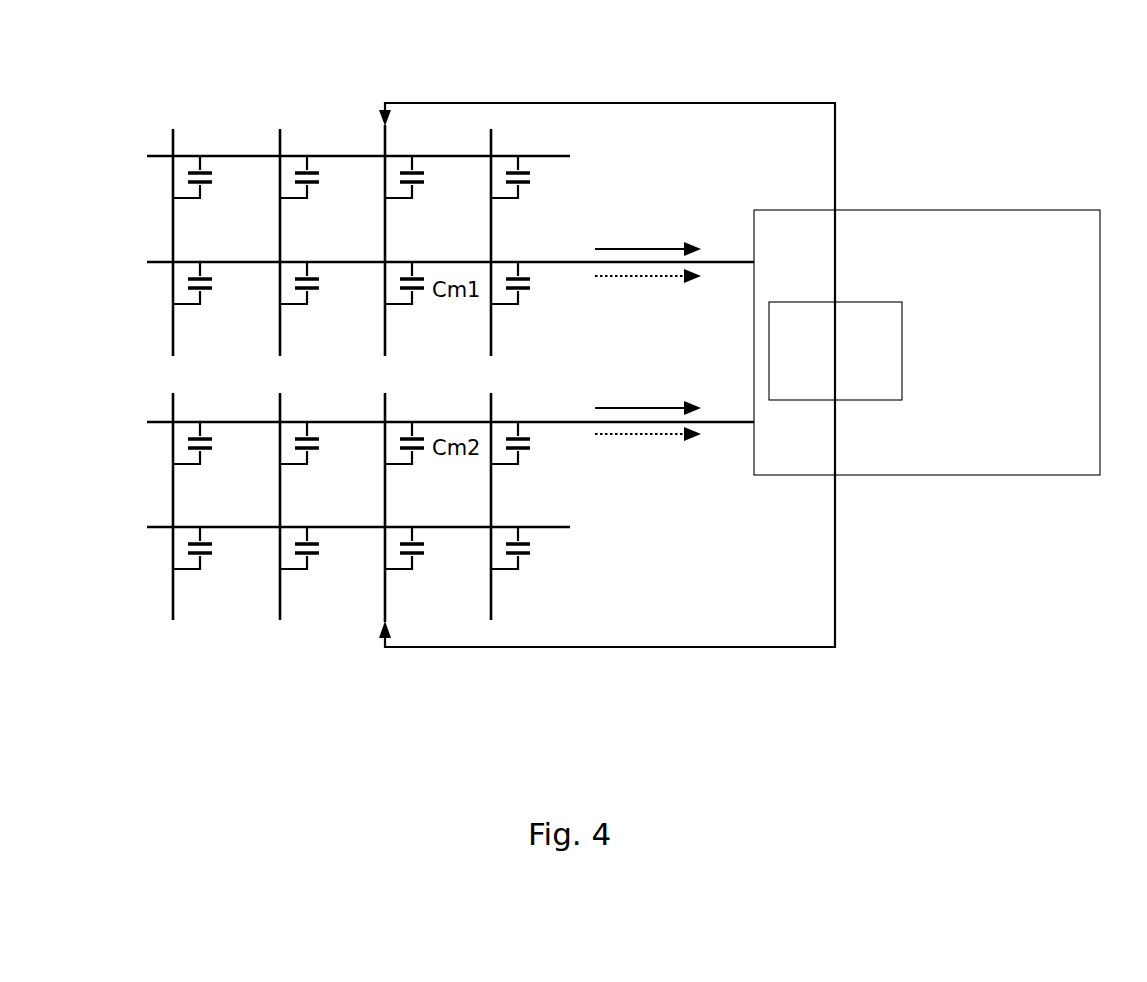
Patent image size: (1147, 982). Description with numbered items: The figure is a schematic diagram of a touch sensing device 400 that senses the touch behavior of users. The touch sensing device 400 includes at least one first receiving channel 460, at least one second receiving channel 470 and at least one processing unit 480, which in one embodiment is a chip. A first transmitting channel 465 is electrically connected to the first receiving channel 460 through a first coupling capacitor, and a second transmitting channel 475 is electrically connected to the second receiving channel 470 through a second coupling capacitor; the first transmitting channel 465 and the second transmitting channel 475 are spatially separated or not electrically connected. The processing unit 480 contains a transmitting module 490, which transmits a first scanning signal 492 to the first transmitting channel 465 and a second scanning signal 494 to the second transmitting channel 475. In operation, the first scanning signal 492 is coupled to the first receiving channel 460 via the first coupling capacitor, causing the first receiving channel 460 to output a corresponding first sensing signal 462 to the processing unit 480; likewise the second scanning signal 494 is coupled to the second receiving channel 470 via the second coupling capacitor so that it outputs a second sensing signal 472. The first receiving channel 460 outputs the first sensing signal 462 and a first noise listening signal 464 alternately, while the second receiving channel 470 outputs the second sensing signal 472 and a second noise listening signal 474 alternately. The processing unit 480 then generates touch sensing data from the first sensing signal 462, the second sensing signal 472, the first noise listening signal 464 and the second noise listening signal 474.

The touch sensing device 400 is at (1102, 61).
The first receiving channel 460 is at (162, 262).
The first sensing signal 462 is at (608, 249).
The first noise listening signal 464 is at (608, 276).
The first transmitting channel 465 is at (385, 340).
The second receiving channel 470 is at (162, 422).
The second sensing signal 472 is at (608, 408).
The second noise listening signal 474 is at (608, 434).
The second transmitting channel 475 is at (385, 602).
The processing unit 480 is at (1042, 210).
The transmitting module 490 is at (816, 391).
The first scanning signal 492 is at (605, 103).
The second scanning signal 494 is at (613, 647).